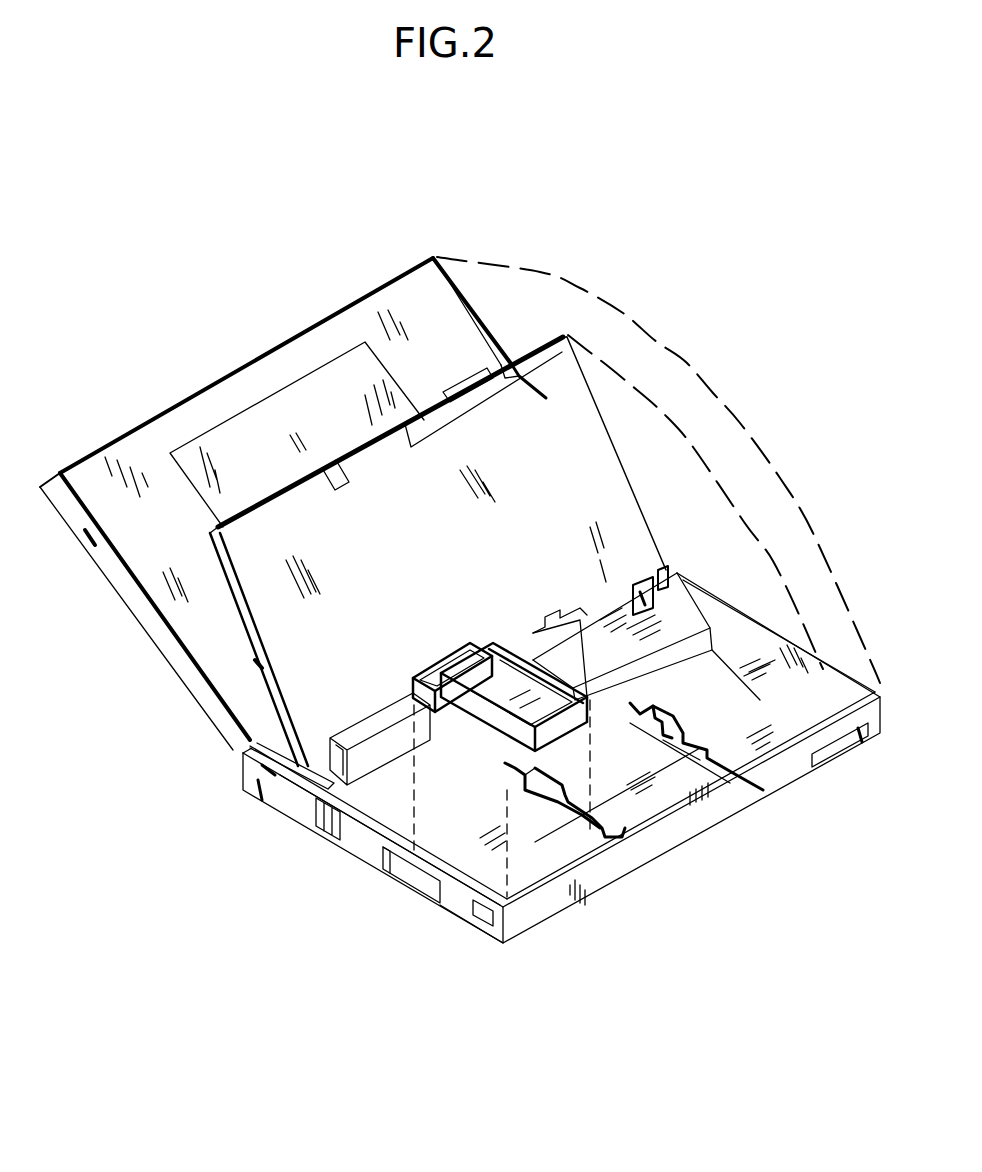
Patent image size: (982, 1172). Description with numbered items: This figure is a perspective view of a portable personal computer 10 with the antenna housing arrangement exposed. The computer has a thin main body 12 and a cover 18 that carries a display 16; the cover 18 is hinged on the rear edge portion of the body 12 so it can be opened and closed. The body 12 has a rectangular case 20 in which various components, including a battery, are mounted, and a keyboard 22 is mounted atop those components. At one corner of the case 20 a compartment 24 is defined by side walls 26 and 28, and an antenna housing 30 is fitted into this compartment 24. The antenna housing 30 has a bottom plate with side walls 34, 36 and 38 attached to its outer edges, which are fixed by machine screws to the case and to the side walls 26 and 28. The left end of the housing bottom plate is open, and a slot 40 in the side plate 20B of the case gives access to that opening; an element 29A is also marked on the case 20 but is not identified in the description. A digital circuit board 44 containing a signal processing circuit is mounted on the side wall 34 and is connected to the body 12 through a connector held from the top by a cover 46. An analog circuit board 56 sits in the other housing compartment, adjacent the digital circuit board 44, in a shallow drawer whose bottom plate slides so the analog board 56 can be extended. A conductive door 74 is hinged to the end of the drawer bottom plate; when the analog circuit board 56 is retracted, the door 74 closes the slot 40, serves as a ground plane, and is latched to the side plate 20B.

The portable personal computer 10 is at (678, 334).
The main body 12 is at (243, 768).
The display 16 is at (307, 400).
The cover 18 is at (438, 318).
The case 20 is at (833, 695).
The side plate 20B is at (360, 837).
The keyboard 22 is at (606, 512).
The compartment 24 is at (552, 837).
The side wall 26 is at (550, 787).
The side wall 28 is at (467, 827).
The front wall bottom edge 29A is at (548, 895).
The antenna housing 30 is at (505, 628).
The side wall 34 is at (630, 745).
The side wall 36 is at (672, 572).
The side wall 38 is at (495, 640).
The slot 40 is at (433, 897).
The digital circuit board 44 is at (650, 745).
The cover 46 is at (700, 596).
The analog circuit board 56 is at (462, 672).
The door 74 is at (425, 676).